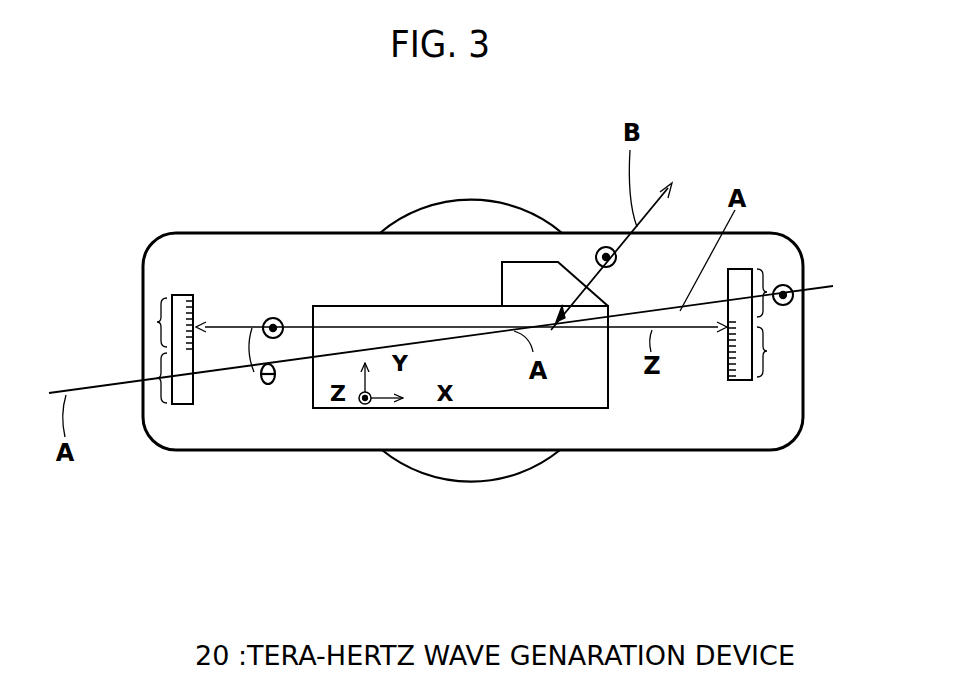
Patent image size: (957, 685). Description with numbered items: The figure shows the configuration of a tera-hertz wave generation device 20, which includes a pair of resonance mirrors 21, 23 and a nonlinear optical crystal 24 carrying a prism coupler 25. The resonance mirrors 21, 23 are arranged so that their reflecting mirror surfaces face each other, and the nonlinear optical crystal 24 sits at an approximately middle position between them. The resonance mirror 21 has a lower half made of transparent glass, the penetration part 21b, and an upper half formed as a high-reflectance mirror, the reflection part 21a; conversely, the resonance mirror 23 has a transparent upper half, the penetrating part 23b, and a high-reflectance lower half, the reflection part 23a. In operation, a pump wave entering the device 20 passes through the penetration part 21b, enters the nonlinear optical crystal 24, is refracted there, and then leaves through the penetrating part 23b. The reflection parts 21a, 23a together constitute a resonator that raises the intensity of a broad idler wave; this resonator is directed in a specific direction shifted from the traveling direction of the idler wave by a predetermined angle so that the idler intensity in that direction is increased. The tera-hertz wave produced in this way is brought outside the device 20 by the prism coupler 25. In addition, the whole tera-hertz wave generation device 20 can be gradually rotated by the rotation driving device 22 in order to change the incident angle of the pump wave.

The tera-hertz wave generation device 20 is at (151, 449).
The resonance mirror 21 is at (183, 405).
The reflection part 21a is at (162, 300).
The penetration part 21b is at (163, 368).
The rotation driving device 22 is at (538, 465).
The resonance mirror 23 is at (740, 380).
The reflection part 23a is at (771, 353).
The penetrating part 23b is at (768, 283).
The nonlinear optical crystal 24 is at (375, 304).
The prism coupler 25 is at (530, 278).